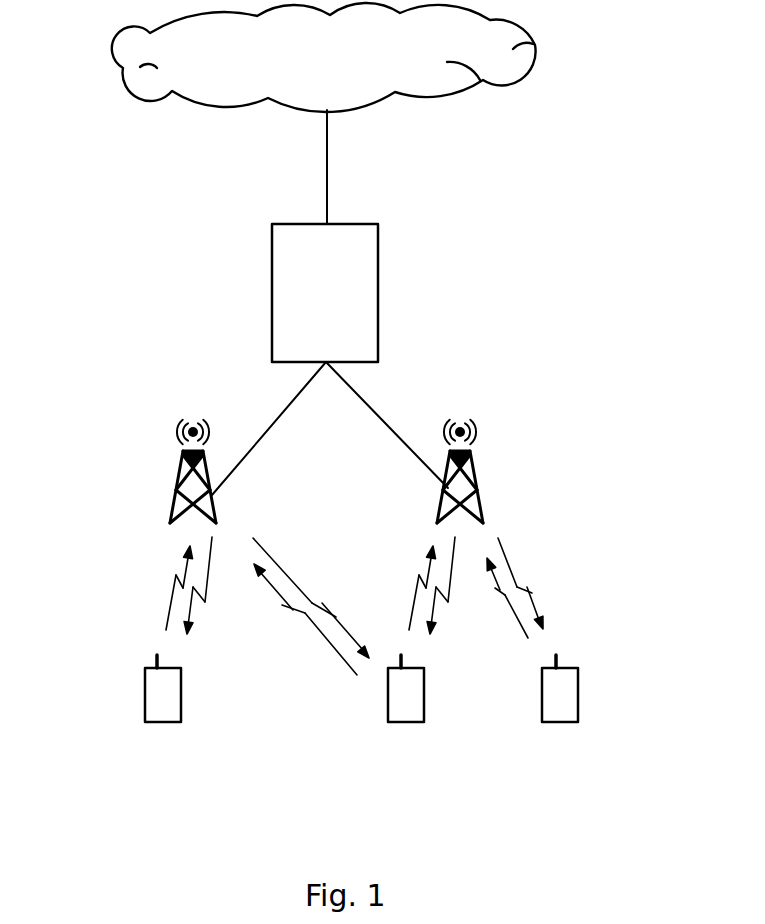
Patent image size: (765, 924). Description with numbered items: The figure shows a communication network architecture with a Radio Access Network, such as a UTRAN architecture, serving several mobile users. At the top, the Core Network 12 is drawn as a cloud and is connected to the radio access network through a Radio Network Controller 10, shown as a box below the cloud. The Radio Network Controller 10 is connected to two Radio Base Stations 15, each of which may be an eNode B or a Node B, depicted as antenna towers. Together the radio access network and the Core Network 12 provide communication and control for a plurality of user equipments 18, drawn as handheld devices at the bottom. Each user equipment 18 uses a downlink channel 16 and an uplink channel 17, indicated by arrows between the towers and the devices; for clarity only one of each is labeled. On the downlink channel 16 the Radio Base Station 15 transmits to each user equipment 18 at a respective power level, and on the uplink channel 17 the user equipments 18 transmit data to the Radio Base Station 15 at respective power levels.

The Radio Network Controller 10 is at (380, 285).
The Core Network 12 is at (533, 47).
The Radio Base Station 15 is at (178, 478).
The downlink channel 16 is at (262, 548).
The uplink channel 17 is at (170, 588).
The user equipment 18 is at (145, 692).